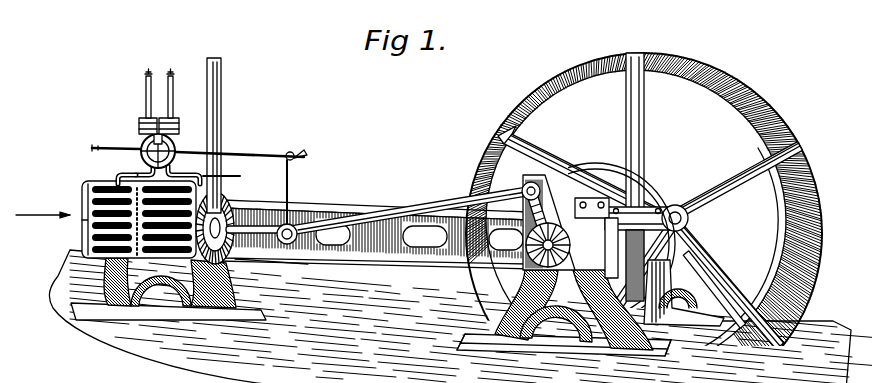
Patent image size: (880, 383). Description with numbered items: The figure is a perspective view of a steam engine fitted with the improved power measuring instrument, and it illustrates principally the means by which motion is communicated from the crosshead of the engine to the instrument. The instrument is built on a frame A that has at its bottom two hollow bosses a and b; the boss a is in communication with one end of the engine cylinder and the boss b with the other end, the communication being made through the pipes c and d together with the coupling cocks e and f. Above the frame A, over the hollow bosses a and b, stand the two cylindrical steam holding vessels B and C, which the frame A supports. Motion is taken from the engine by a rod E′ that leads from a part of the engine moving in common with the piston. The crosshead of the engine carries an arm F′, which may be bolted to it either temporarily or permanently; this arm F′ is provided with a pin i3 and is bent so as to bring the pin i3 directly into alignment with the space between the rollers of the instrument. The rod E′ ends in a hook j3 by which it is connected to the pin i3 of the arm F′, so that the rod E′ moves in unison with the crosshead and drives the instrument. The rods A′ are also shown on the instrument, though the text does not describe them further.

The valve rods A' is at (153, 93).
The cylindrical steam holding vessel B is at (133, 117).
The cylindrical steam holding vessel C is at (170, 118).
The coupling cock e is at (128, 140).
The frame A is at (169, 150).
The rod E' is at (180, 157).
The hollow boss a is at (138, 164).
The hollow boss b is at (168, 165).
The pipe c is at (108, 167).
The pipe d is at (226, 176).
The coupling cock f is at (222, 135).
The hook j3 is at (277, 145).
The pin i3 is at (304, 142).
The arm F' is at (301, 192).